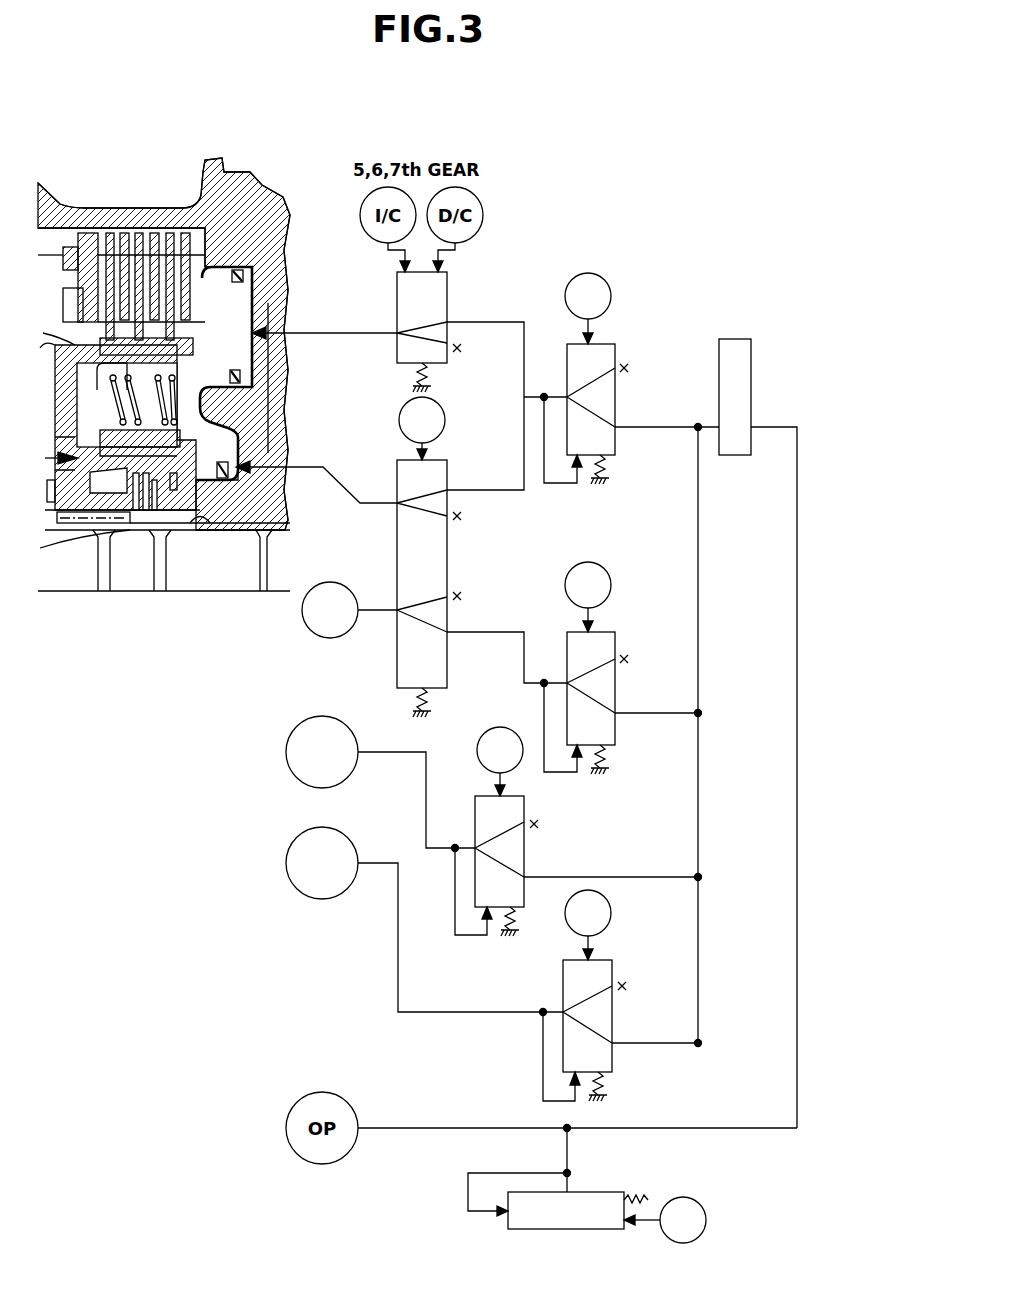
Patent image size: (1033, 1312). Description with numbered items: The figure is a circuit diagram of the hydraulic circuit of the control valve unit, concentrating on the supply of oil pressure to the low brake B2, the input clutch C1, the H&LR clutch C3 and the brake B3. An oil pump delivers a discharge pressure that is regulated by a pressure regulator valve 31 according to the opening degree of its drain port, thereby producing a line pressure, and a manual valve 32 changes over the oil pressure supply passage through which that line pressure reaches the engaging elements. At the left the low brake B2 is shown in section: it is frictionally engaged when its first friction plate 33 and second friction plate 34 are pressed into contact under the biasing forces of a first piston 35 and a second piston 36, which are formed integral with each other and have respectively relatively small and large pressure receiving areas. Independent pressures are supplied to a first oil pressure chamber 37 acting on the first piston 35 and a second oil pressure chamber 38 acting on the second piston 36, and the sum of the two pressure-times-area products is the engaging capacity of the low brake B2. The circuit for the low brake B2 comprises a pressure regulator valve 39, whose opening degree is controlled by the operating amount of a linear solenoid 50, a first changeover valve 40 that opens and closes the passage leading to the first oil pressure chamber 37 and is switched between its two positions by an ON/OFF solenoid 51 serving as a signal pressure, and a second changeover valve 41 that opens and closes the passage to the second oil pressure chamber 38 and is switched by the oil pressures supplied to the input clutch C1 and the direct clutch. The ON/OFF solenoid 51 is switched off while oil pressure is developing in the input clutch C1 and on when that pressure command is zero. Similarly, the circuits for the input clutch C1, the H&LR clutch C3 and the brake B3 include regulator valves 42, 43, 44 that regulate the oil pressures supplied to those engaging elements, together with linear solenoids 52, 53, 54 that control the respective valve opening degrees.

The pressure regulator valve 31 is at (600, 1192).
The manual valve 32 is at (735, 339).
The first friction plate 33 is at (138, 232).
The second friction plate 34 is at (58, 344).
The first piston 35 is at (272, 533).
The second piston 36 is at (215, 268).
The first oil pressure chamber 37 is at (236, 472).
The second oil pressure chamber 38 is at (243, 272).
The pressure regulator valve 39 is at (610, 344).
The first changeover valve 40 is at (447, 477).
The second changeover valve 41 is at (447, 295).
The regulator valve 42 is at (610, 632).
The regulator valve 43 is at (483, 796).
The regulator valve 44 is at (608, 960).
The linear solenoid 50 is at (588, 273).
The ON/OFF solenoid 51 is at (443, 417).
The linear solenoid 52 is at (588, 562).
The linear solenoid 53 is at (500, 727).
The linear solenoid 54 is at (566, 928).
The low brake B2 is at (160, 204).
The 2346 brake B3 is at (286, 863).
The input clutch C1 is at (302, 612).
The H&LR clutch C3 is at (286, 752).